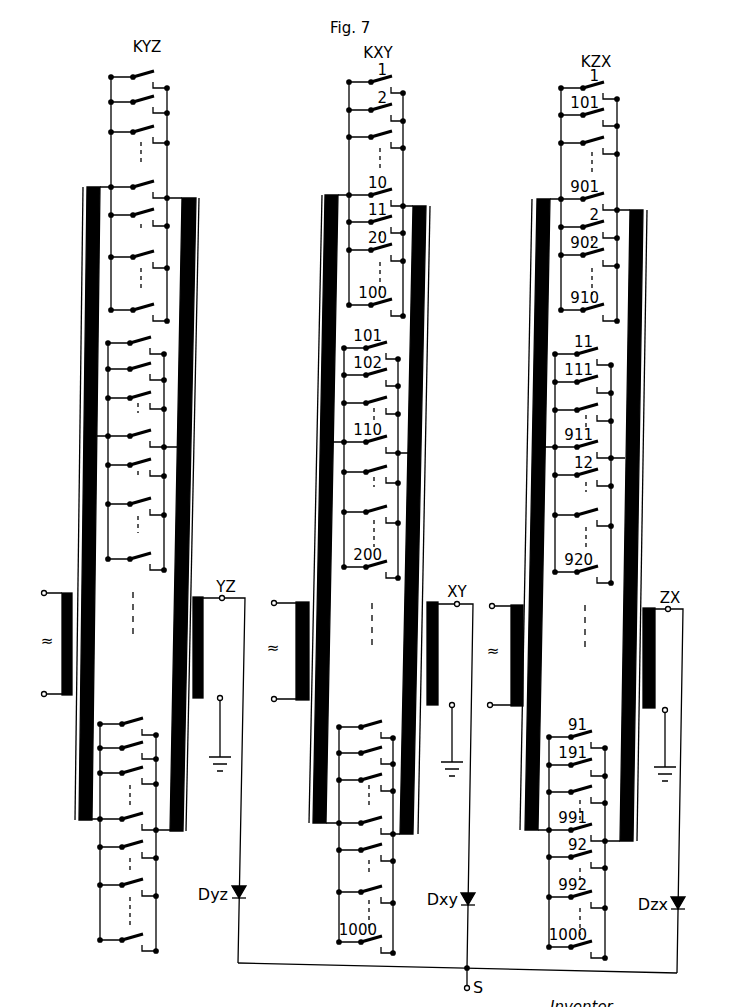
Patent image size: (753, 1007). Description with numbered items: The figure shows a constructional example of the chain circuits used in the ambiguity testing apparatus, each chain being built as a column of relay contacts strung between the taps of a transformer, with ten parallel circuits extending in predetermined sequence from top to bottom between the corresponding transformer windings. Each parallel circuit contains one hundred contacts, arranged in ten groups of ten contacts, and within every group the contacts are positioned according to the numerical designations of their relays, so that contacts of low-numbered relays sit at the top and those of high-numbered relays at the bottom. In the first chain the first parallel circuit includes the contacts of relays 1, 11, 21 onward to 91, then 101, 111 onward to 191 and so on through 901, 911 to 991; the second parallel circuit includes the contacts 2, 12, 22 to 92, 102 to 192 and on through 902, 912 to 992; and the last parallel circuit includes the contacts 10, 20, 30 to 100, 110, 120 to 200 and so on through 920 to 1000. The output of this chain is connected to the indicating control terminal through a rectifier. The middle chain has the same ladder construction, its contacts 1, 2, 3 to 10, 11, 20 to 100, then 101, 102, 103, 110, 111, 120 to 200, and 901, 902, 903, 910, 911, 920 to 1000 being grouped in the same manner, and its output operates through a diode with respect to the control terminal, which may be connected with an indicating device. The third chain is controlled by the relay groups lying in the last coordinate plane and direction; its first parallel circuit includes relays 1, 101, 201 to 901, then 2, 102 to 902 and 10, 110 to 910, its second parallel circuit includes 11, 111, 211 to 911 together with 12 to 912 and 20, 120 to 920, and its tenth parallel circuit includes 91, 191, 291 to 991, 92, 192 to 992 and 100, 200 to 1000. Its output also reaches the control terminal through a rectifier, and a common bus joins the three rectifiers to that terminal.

The relay contact 1 is at (139, 73).
The relay contact 2 is at (136, 339).
The relay contact 3 is at (376, 133).
The relay contact 10 is at (128, 720).
The relay contact 11 is at (139, 98).
The relay contact 12 is at (136, 365).
The relay contact 20 is at (128, 744).
The relay contact 21 is at (139, 128).
The relay contact 22 is at (136, 394).
The relay contact 30 is at (128, 769).
The relay contact 91 is at (139, 183).
The relay contact 92 is at (136, 432).
The relay contact 100 is at (128, 815).
The relay contact 101 is at (139, 211).
The relay contact 102 is at (136, 461).
The relay contact 103 is at (371, 399).
The relay contact 110 is at (128, 843).
The relay contact 111 is at (371, 468).
The relay contact 120 is at (371, 508).
The relay contact 191 is at (139, 253).
The relay contact 192 is at (136, 500).
The relay contact 200 is at (128, 881).
The relay contact 201 is at (589, 139).
The relay contact 211 is at (583, 406).
The relay contact 291 is at (577, 788).
The relay contact 901 is at (366, 723).
The relay contact 902 is at (366, 749).
The relay contact 903 is at (366, 776).
The relay contact 910 is at (366, 819).
The relay contact 911 is at (366, 846).
The relay contact 912 is at (583, 511).
The relay contact 920 is at (366, 888).
The relay contact 991 is at (139, 306).
The relay contact 992 is at (136, 555).
The relay contact 1000 is at (128, 936).